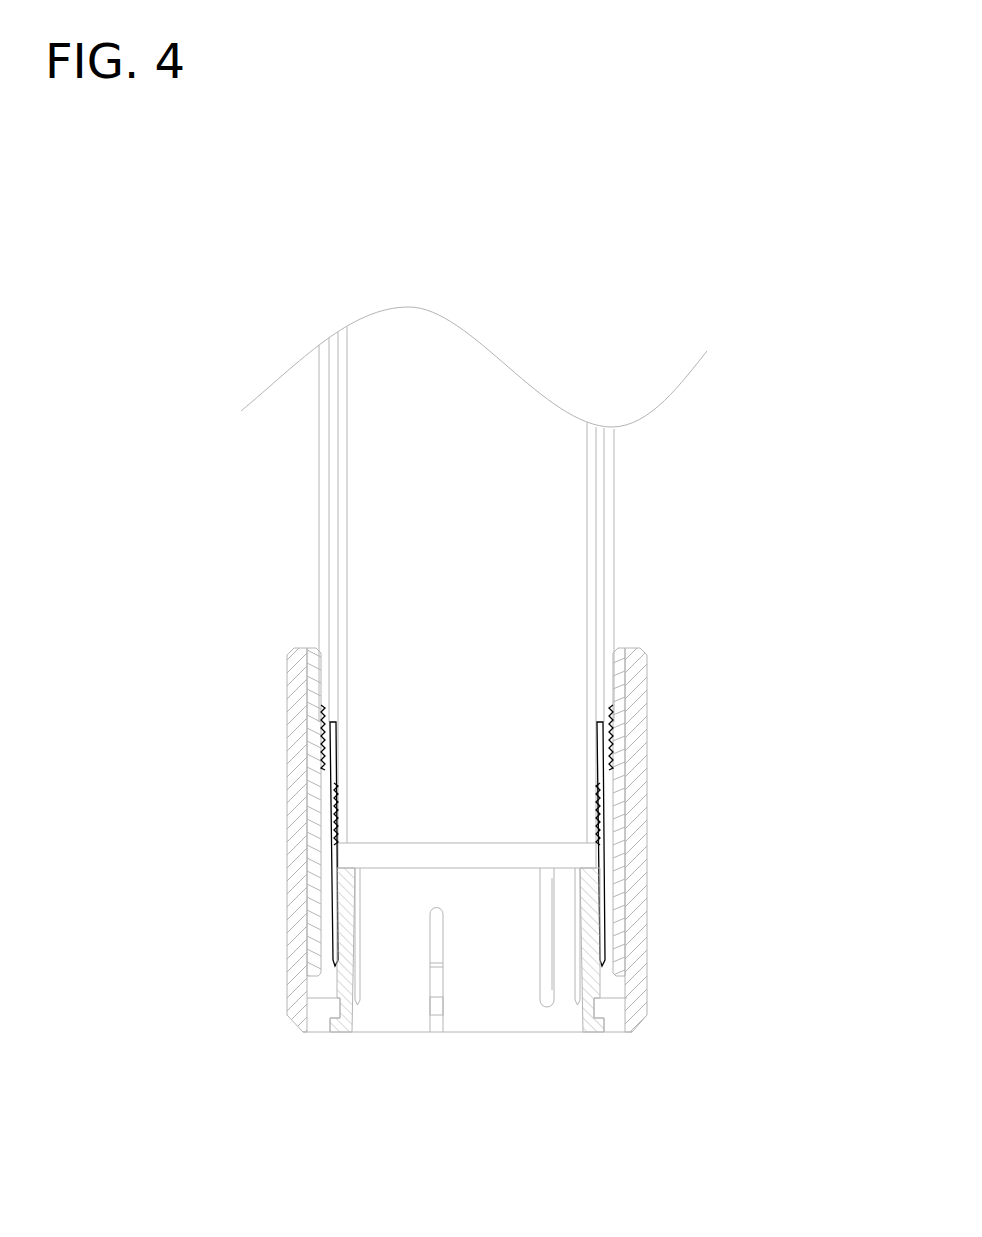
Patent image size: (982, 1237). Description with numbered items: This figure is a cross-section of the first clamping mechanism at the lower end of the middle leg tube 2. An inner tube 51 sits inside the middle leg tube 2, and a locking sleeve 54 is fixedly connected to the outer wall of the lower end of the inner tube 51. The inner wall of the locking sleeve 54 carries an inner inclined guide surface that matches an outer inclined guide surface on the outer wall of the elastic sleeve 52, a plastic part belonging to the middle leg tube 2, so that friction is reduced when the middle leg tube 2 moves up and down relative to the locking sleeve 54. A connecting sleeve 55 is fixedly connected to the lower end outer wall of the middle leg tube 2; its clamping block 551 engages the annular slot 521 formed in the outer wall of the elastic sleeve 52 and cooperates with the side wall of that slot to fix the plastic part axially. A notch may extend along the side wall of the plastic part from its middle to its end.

The middle leg tube 2 is at (318, 553).
The inner tube 51 is at (492, 640).
The connecting sleeve 55 is at (318, 705).
The locking sleeve 54 is at (330, 855).
The elastic sleeve 52 is at (485, 937).
The clamping block 551 is at (326, 1005).
The annular slot 521 is at (597, 1010).